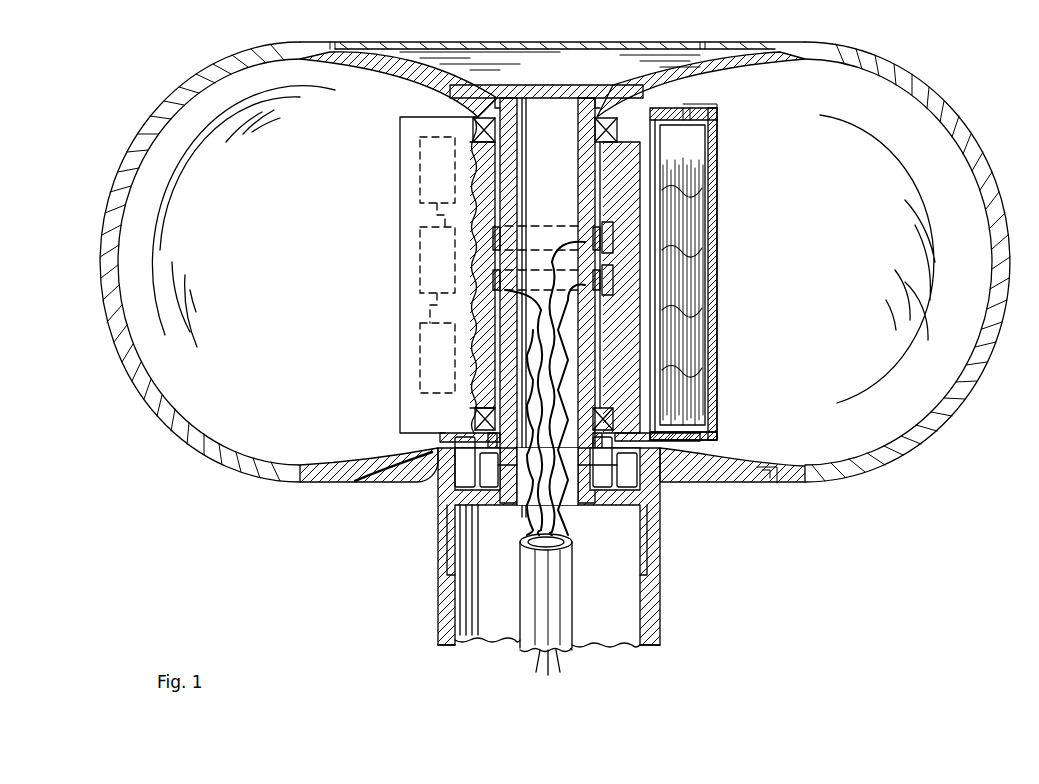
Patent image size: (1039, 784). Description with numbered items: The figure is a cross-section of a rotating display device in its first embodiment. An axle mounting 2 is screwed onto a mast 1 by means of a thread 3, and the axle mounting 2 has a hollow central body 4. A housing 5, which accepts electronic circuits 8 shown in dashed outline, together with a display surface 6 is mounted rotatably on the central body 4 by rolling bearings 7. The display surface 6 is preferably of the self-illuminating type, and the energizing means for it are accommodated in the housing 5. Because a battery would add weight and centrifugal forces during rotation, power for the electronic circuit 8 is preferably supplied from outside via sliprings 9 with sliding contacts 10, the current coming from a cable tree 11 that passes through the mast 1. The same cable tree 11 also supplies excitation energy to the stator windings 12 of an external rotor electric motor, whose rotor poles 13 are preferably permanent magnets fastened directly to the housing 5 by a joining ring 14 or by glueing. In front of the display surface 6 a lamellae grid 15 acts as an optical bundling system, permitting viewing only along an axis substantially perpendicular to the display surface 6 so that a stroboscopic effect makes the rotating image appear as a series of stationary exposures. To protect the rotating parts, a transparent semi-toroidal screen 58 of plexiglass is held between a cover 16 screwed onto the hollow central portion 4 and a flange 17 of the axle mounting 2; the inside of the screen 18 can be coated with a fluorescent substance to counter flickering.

The mast 1 is at (660, 613).
The axle mounting 2 is at (660, 507).
The thread 3 is at (438, 538).
The hollow central body 4 is at (500, 146).
The housing 5 is at (400, 262).
The display surface 6 is at (648, 155).
The rolling bearings 7 is at (462, 112).
The electronic circuits 8 is at (420, 170).
The sliprings 9 is at (503, 272).
The sliding contacts 10 is at (610, 272).
The cable tree 11 is at (570, 608).
The stator windings 12 is at (468, 492).
The rotor poles 13 is at (489, 490).
The joining ring 14 is at (655, 440).
The lamellae grid 15 is at (700, 312).
The cover 16 is at (535, 50).
The flange 17 is at (358, 472).
The screen 18 is at (720, 347).
The screen 58 is at (148, 384).